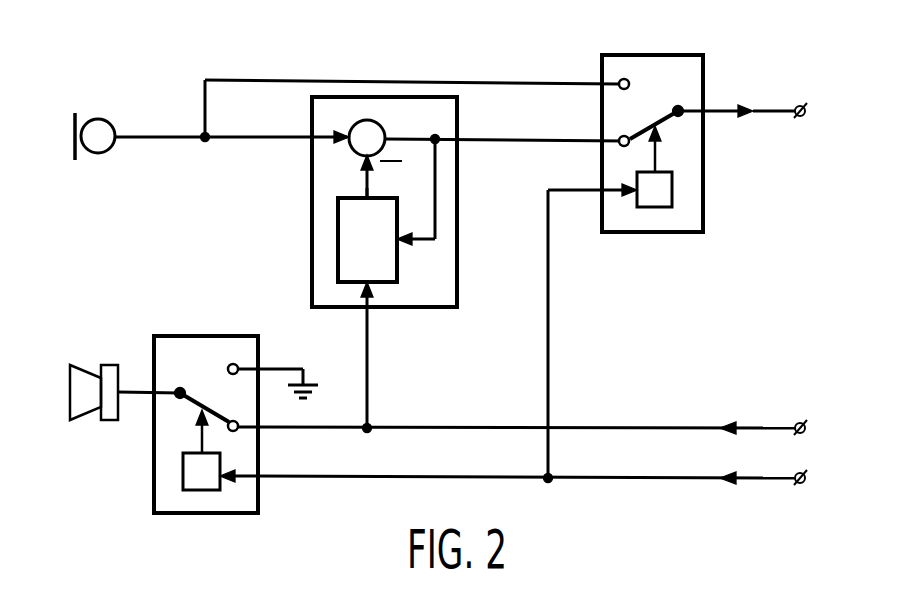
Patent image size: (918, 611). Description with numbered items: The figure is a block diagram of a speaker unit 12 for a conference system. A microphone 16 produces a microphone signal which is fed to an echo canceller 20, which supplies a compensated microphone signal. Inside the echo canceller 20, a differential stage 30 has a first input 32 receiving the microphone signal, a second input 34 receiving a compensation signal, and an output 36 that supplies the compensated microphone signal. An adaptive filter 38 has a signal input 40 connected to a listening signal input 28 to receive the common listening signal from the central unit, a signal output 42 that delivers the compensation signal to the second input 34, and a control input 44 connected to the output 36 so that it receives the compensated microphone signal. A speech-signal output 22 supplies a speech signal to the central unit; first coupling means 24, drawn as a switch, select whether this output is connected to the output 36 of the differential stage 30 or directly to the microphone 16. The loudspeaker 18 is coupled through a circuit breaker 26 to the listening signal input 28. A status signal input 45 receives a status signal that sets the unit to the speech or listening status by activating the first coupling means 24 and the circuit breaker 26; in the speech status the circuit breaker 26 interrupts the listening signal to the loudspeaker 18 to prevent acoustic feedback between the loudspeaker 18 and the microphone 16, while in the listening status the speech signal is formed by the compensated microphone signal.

The speaker unit 12 is at (439, 376).
The microphone 16 is at (102, 118).
The loudspeaker 18 is at (112, 421).
The echo canceller 20 is at (458, 214).
The speech-signal output 22 is at (800, 120).
The first coupling means 24 is at (632, 234).
The circuit breaker 26 is at (203, 514).
The listening signal input 28 is at (798, 421).
The differential stage 30 is at (367, 119).
The first input 32 is at (344, 132).
The second input 34 is at (356, 164).
The output 36 is at (388, 130).
The adaptive filter 38 is at (337, 240).
The signal input 40 is at (356, 288).
The signal output 42 is at (360, 194).
The control input 44 is at (399, 244).
The status signal input 45 is at (800, 486).